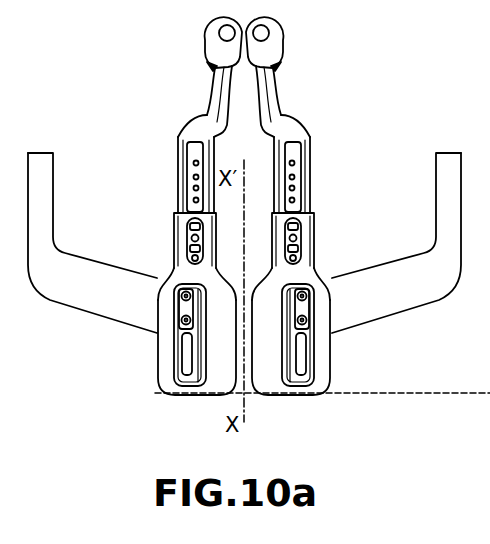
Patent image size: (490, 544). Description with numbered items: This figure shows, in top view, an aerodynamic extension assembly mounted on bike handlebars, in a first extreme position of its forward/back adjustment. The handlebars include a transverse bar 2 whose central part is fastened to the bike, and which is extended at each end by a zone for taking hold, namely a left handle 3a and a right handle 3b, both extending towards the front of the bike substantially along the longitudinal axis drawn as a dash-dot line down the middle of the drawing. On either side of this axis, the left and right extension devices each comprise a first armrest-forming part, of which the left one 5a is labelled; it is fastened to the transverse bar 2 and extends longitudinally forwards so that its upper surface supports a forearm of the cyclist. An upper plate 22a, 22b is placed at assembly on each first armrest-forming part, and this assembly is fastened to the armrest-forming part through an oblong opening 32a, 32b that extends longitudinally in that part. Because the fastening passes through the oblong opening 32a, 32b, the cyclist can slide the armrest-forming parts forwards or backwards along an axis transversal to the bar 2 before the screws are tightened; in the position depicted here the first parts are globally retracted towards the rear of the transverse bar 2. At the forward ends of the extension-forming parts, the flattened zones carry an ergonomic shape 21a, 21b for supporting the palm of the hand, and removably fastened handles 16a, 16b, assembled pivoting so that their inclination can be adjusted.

The transverse bar 2 is at (247, 292).
The handle of the handlebars 3a is at (43, 178).
The handle of the handlebars 3b is at (446, 163).
The first armrest-forming part 5a is at (165, 285).
The handle 16a is at (222, 50).
The handle 16b is at (272, 36).
The ergonomic shape 21a is at (203, 113).
The ergonomic shape 21b is at (283, 123).
The upper plate 22a is at (158, 336).
The upper plate 22b is at (317, 272).
The oblong opening 32a is at (160, 388).
The oblong opening 32b is at (312, 352).